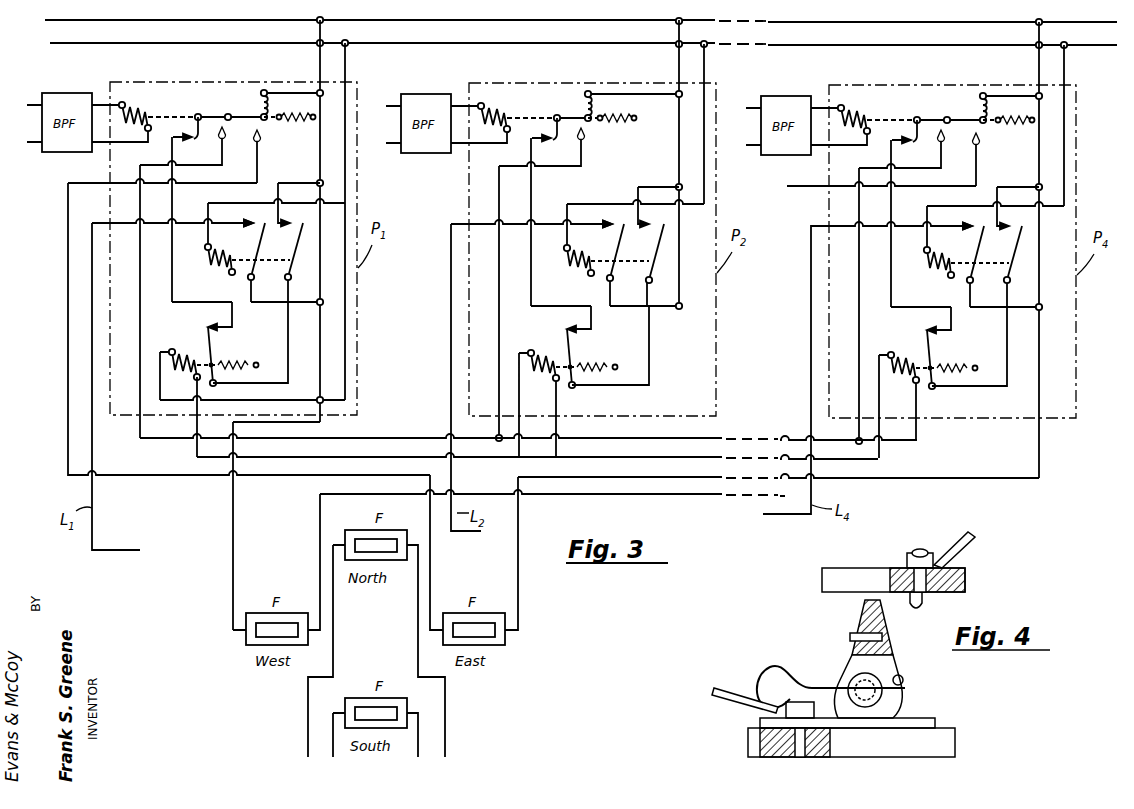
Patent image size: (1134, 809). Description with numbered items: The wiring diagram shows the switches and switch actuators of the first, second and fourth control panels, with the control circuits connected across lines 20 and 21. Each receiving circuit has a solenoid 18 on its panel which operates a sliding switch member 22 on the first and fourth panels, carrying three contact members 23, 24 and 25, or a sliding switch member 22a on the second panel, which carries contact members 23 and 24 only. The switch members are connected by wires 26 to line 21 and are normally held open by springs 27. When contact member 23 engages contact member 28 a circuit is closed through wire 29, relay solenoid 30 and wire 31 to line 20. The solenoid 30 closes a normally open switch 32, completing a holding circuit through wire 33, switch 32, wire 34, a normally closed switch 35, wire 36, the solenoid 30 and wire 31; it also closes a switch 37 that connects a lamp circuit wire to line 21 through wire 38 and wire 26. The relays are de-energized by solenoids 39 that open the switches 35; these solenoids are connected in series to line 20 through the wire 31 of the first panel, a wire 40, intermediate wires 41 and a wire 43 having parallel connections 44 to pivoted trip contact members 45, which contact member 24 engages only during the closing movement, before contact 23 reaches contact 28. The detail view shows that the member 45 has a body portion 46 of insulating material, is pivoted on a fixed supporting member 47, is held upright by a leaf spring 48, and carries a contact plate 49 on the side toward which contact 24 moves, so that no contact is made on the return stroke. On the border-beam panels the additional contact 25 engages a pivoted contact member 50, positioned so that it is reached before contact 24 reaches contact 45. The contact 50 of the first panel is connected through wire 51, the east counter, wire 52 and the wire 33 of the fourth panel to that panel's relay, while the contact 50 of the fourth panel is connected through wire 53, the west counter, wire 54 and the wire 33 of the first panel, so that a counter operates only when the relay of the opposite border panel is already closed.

In FIG. 3, the solenoid 18 is at (146, 116).
In FIG. 3, the line 20 is at (50, 44).
In FIG. 3, the line 21 is at (45, 21).
In FIG. 3, the sliding switch member 22 is at (262, 114).
In FIG. 4, the sliding switch member 22 is at (965, 574).
In FIG. 3, the sliding switch member 22a is at (564, 104).
In FIG. 3, the contact member 23 is at (199, 138).
In FIG. 3, the contact member 24 is at (228, 121).
In FIG. 4, the contact member 24 is at (925, 605).
In FIG. 3, the contact member 25 is at (266, 121).
In FIG. 3, the wire 26 is at (320, 70).
In FIG. 3, the spring 27 is at (291, 102).
In FIG. 3, the contact member 28 is at (176, 112).
In FIG. 3, the wire 29 is at (169, 264).
In FIG. 3, the relay solenoid 30 is at (214, 270).
In FIG. 3, the wire 31 is at (346, 70).
In FIG. 3, the switch 32 is at (298, 239).
In FIG. 3, the wire 33 is at (281, 186).
In FIG. 3, the wire 34 is at (288, 358).
In FIG. 3, the switch 35 is at (217, 343).
In FIG. 3, the wire 36 is at (234, 317).
In FIG. 3, the switch 37 is at (260, 240).
In FIG. 3, the wire 38 is at (270, 298).
In FIG. 3, the solenoid 39 is at (176, 380).
In FIG. 3, the wire 40 is at (278, 400).
In FIG. 3, the intermediate wires 41 is at (463, 459).
In FIG. 3, the wire 43 is at (657, 443).
In FIG. 3, the parallel connection 44 is at (146, 334).
In FIG. 3, the contact member 45 is at (224, 135).
In FIG. 4, the contact member 45 is at (898, 662).
In FIG. 4, the body portion 46 is at (862, 622).
In FIG. 4, the supporting member 47 is at (943, 728).
In FIG. 4, the leaf spring 48 is at (800, 666).
In FIG. 4, the contact plate 49 is at (885, 628).
In FIG. 3, the contact member 50 is at (259, 140).
In FIG. 3, the wire 51 is at (67, 311).
In FIG. 3, the wire 52 is at (890, 479).
In FIG. 3, the wire 53 is at (588, 496).
In FIG. 3, the wire 54 is at (232, 540).